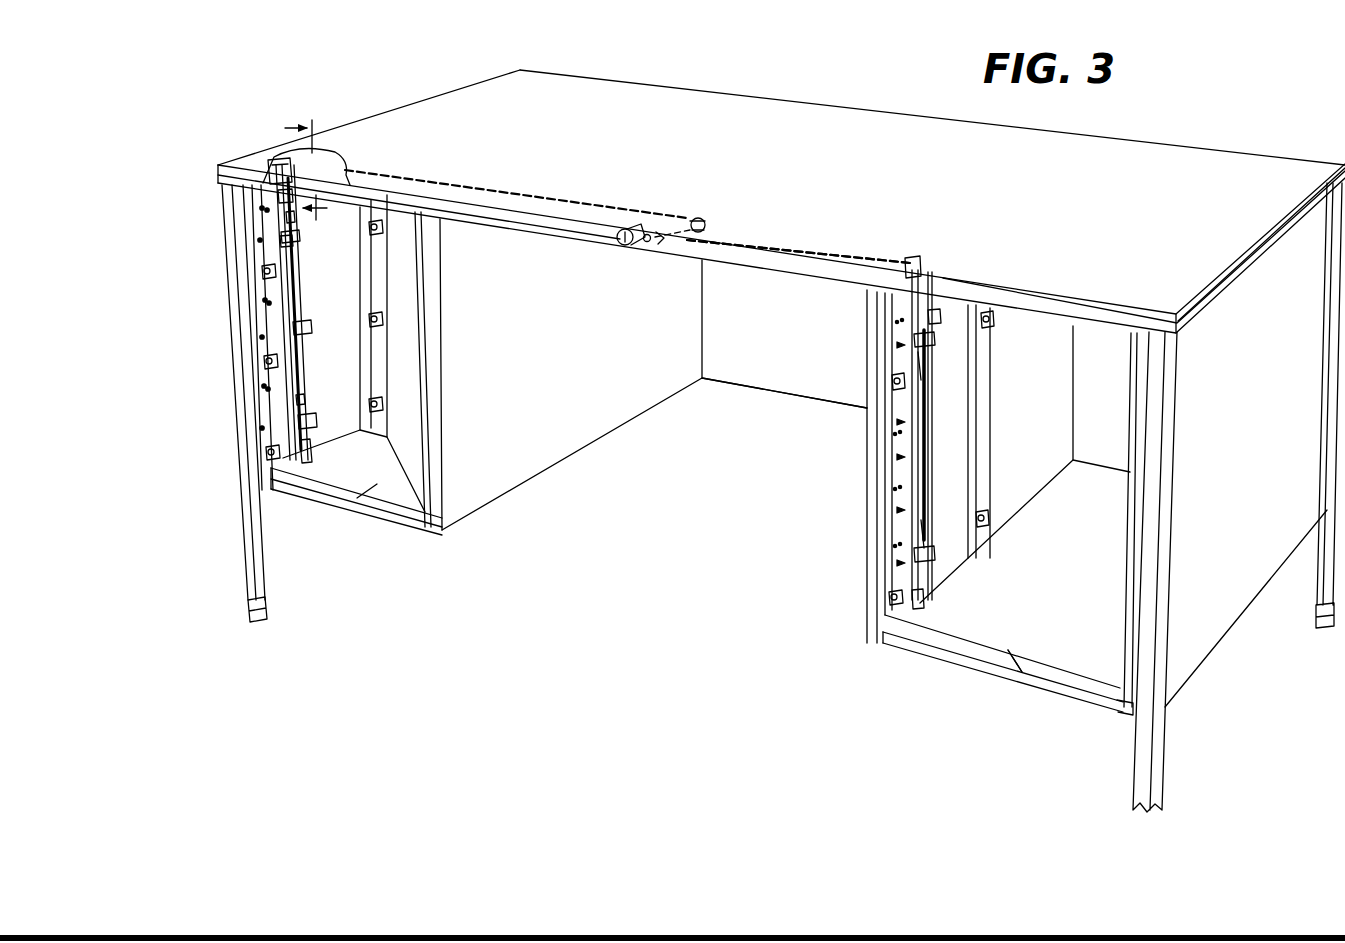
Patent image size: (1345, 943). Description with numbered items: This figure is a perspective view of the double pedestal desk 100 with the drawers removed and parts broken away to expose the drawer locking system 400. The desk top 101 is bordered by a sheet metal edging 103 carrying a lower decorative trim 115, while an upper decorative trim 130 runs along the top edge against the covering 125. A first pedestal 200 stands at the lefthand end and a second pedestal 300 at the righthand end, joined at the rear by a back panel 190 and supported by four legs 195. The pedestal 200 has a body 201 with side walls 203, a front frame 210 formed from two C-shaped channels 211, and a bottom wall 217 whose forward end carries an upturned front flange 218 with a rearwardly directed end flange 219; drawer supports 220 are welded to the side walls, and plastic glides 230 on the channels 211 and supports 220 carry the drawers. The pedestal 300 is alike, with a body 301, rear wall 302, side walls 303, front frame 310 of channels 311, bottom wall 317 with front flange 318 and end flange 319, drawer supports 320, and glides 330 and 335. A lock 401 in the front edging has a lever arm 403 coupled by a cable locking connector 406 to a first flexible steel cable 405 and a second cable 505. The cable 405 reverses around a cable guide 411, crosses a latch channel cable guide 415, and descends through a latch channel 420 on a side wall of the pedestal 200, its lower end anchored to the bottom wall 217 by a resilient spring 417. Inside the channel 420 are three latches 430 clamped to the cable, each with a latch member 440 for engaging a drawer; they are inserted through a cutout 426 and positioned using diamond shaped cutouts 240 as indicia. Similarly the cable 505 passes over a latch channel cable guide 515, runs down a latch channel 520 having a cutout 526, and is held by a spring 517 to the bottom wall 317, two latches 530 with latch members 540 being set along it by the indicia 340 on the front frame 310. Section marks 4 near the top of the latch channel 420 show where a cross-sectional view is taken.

The double pedestal desk 100 is at (305, 88).
The desk top 101 is at (748, 125).
The edging 103 is at (1025, 300).
The lower decorative trim 115 is at (953, 302).
The covering 125 is at (855, 156).
The upper decorative trim 130 is at (1102, 303).
The back panel 190 is at (810, 388).
The legs 195 is at (250, 505).
The first pedestal 200 is at (625, 445).
The body 201 is at (518, 432).
The side walls 203 is at (320, 368).
The front frame 210 is at (393, 498).
The C-shaped channels 211 is at (273, 378).
The bottom wall 217 is at (368, 463).
The front flange 218 is at (405, 527).
The end flange 219 is at (310, 487).
The drawer supports 220 is at (372, 300).
The glides 230 is at (262, 271).
The diamond shaped cutout 240 is at (262, 337).
The second pedestal 300 is at (975, 688).
The body 301 is at (1225, 595).
The rear wall 302 is at (1091, 411).
The side walls 303 is at (1020, 405).
The front frame 310 is at (955, 640).
The C-shaped channels 311 is at (892, 576).
The bottom wall 317 is at (1051, 600).
The front flange 318 is at (1076, 702).
The end flange 319 is at (1015, 680).
The drawer supports 320 is at (985, 478).
The glides 330 is at (892, 380).
The glides 335 is at (889, 600).
The diamond-shaped indicia 340 is at (896, 345).
The locking system 400 is at (278, 300).
The lock 401 is at (617, 241).
The lever arm 403 is at (647, 243).
The first flexible steel cable 405 is at (296, 400).
The cable locking connector 406 is at (664, 262).
The cable guide 411 is at (702, 218).
The latch channel cable guide 415 is at (272, 165).
The resilient spring 417 is at (300, 447).
The latch channel 420 is at (276, 198).
The cutouts 426 is at (285, 218).
The latches 430 is at (282, 241).
The latch member 440 is at (302, 238).
The cable 505 is at (740, 242).
The latch channel cable guide 515 is at (918, 262).
The spring 517 is at (924, 600).
The latch channel 520 is at (906, 418).
The cutout 526 is at (940, 317).
The latches 530 is at (921, 356).
The latch members 540 is at (937, 343).
The section line 4 is at (317, 168).